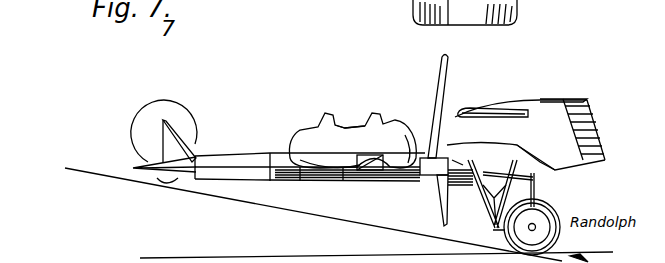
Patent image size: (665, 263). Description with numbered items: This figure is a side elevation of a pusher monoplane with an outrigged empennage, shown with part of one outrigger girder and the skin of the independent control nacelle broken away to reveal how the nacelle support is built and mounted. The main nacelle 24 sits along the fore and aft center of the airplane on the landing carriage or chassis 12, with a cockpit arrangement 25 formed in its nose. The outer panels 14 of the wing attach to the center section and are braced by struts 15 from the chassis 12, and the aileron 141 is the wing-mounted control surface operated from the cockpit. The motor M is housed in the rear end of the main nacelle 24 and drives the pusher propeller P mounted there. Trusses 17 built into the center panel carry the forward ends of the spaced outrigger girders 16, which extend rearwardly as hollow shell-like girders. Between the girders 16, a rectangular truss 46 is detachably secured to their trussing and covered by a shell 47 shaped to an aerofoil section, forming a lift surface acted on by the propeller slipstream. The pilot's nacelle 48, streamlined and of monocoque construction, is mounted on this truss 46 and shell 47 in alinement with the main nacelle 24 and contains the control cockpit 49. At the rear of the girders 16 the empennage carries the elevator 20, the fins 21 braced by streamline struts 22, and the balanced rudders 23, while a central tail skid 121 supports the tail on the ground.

The vertical balanced rudder 23 is at (150, 112).
The fin 21 is at (178, 125).
The streamline strut 22 is at (180, 140).
The elevator 20 is at (137, 168).
The tail skid 121 is at (170, 188).
The outrigger girder 16 is at (197, 160).
The pilot's nacelle 48 is at (307, 138).
The control cockpit 49 is at (345, 128).
The truss 46 is at (367, 170).
The shell 47 is at (343, 173).
The aileron 141 is at (423, 143).
The pusher propeller P is at (443, 90).
The outer panel 14 is at (503, 152).
The motor M is at (480, 113).
The cockpit arrangement 25 is at (565, 100).
The main nacelle 24 is at (592, 132).
The bracing strut 15 is at (540, 177).
The landing carriage 12 is at (535, 214).
The truss 17 is at (475, 188).